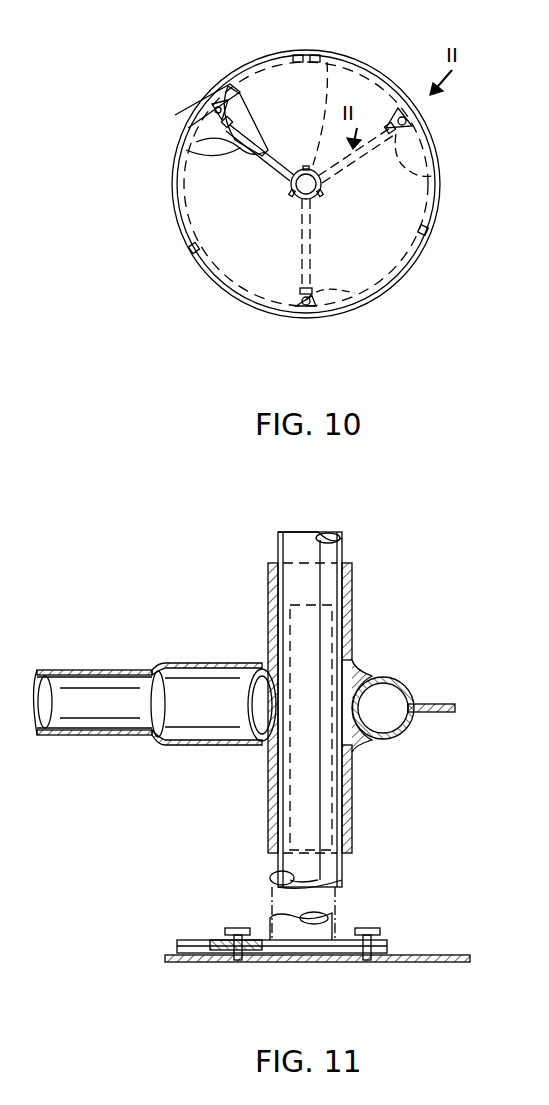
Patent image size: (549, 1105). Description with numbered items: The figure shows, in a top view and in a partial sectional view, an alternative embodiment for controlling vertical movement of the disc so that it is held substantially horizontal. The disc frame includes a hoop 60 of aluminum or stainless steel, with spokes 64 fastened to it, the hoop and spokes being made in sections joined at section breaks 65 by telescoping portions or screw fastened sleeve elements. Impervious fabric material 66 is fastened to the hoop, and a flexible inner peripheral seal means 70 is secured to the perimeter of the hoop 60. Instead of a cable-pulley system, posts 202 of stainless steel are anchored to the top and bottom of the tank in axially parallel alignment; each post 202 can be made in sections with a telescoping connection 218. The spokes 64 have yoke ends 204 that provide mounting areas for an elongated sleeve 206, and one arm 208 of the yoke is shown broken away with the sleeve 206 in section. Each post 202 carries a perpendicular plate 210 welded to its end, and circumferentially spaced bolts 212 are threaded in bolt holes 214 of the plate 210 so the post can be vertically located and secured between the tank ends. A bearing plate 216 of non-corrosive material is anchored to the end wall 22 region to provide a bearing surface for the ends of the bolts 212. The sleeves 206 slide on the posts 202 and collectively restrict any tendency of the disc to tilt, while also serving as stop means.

In FIG. 11, the floor 22 is at (240, 996).
In FIG. 10, the hoop 60 is at (228, 86).
In FIG. 11, the hoop 60 is at (410, 688).
In FIG. 10, the spoke 64 is at (196, 150).
In FIG. 11, the spoke 64 is at (100, 685).
In FIG. 10, the section break 65 is at (320, 56).
In FIG. 11, the section break 65 is at (180, 678).
In FIG. 10, the impervious fabric material 66 is at (372, 105).
In FIG. 11, the impervious fabric material 66 is at (110, 736).
In FIG. 10, the inner peripheral seal means 70 is at (428, 228).
In FIG. 11, the inner peripheral seal means 70 is at (452, 712).
In FIG. 11, the post 202 is at (330, 555).
In FIG. 10, the yoke end 204 is at (350, 308).
In FIG. 10, the elongated sleeve 206 is at (210, 110).
In FIG. 11, the elongated sleeve 206 is at (353, 835).
In FIG. 11, the arm 208 is at (256, 690).
In FIG. 11, the perpendicular plate 210 is at (348, 938).
In FIG. 11, the bolt 212 is at (238, 928).
In FIG. 11, the bolt hole 214 is at (215, 942).
In FIG. 11, the bearing plate 216 is at (180, 945).
In FIG. 11, the telescoping connection 218 is at (335, 615).